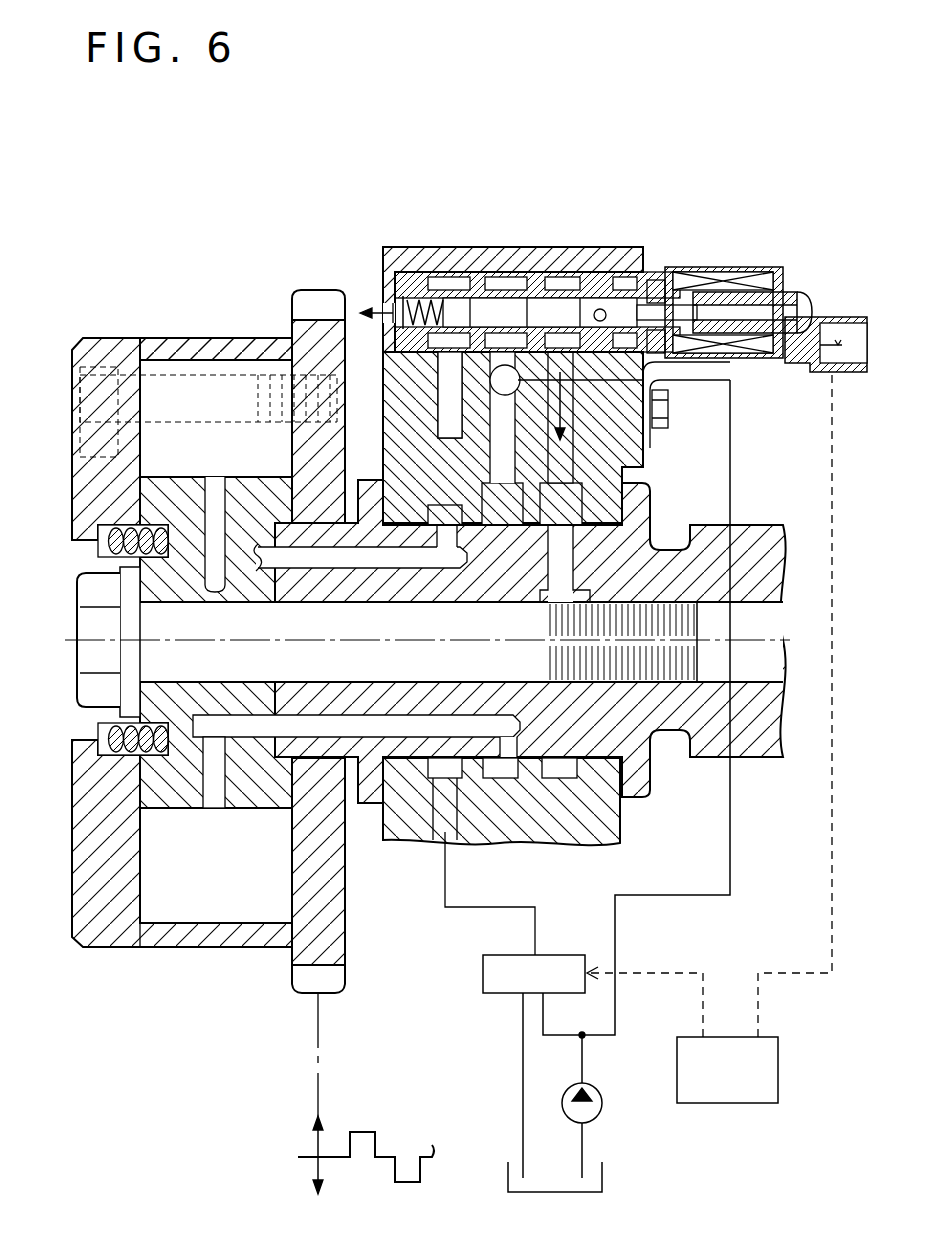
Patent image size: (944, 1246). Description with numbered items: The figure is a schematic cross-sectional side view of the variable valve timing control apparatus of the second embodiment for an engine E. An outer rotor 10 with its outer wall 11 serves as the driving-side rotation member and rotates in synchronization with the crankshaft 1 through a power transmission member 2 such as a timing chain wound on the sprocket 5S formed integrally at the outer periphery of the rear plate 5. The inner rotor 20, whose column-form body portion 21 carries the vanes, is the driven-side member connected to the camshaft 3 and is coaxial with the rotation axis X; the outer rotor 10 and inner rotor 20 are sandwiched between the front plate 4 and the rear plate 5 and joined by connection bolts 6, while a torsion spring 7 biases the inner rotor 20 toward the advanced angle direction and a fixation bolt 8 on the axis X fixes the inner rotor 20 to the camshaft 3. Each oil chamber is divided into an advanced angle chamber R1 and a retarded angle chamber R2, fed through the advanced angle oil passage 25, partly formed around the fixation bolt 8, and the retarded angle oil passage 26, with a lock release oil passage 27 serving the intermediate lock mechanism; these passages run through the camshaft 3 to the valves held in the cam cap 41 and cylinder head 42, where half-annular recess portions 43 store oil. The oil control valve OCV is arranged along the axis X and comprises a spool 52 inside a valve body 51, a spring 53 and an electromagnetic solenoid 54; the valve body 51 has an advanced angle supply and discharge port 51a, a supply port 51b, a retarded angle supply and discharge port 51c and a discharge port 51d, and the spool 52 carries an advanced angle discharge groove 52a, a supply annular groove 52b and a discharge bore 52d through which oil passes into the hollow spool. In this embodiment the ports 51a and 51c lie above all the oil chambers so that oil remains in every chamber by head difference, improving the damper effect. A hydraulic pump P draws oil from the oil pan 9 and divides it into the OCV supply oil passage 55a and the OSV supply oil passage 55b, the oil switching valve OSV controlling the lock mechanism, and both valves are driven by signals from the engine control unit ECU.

The engine E is at (306, 184).
The crankshaft 1 is at (308, 1157).
The power transmission member 2 is at (312, 1050).
The camshaft 3 is at (790, 757).
The front plate 4 is at (98, 947).
The rear plate 5 is at (345, 890).
The sprocket 5S is at (343, 978).
The connection bolt 6 is at (88, 362).
The torsion spring 7 is at (95, 738).
The fixation bolt 8 is at (93, 578).
The oil pan 9 is at (602, 1178).
The outer rotor 10 is at (185, 337).
The housing outer wall 11 is at (230, 338).
The inner rotor 20 is at (138, 790).
The body portion 21 is at (179, 808).
The advanced angle oil passage 25 is at (212, 483).
The retarded angle oil passage 26 is at (438, 425).
The lock release oil passage 27 is at (387, 563).
The cam cap 41 is at (390, 247).
The cylinder head 42 is at (620, 828).
The recess portion 43 is at (500, 515).
The valve body 51 is at (393, 336).
The advanced angle supply and discharge port 51a is at (603, 403).
The supply port 51b is at (503, 393).
The retarded angle supply and discharge port 51c is at (440, 365).
The discharge port 51d is at (393, 305).
The spool 52 is at (452, 290).
The advanced angle discharge groove 52a is at (610, 290).
The supply annular groove 52b is at (503, 285).
The discharge bore 52d is at (558, 307).
The spring 53 is at (421, 298).
The electromagnetic solenoid 54 is at (725, 273).
The OCV supply oil passage 55a is at (730, 850).
The OSV supply oil passage 55b is at (543, 1016).
The oil control valve OCV is at (664, 251).
The oil switching valve OSV is at (534, 974).
The engine control unit ECU is at (709, 737).
The hydraulic pump P is at (603, 1104).
The rotation axis X is at (416, 642).
The advanced angle chamber R1 is at (188, 393).
The retarded angle chamber R2 is at (192, 898).